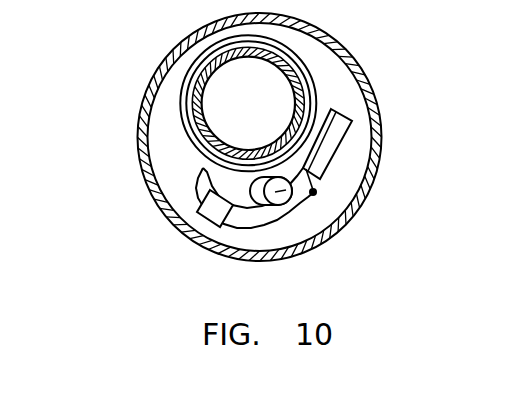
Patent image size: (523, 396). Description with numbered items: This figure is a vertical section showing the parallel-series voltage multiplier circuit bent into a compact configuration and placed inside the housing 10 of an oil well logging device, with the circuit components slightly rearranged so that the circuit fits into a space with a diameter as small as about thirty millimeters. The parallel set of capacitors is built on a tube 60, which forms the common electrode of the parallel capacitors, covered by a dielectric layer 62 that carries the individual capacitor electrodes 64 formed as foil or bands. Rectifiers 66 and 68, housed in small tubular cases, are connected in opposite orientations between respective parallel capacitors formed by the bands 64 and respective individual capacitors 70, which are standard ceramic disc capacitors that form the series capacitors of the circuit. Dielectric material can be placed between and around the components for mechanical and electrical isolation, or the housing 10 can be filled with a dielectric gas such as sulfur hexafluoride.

The housing 10 is at (358, 67).
The tube 60 is at (212, 68).
The dielectric layer 62 is at (190, 98).
The individual capacitor electrodes 64 is at (187, 132).
The rectifier 66 is at (210, 224).
The rectifier 68 is at (264, 206).
The individual capacitors 70 is at (337, 150).